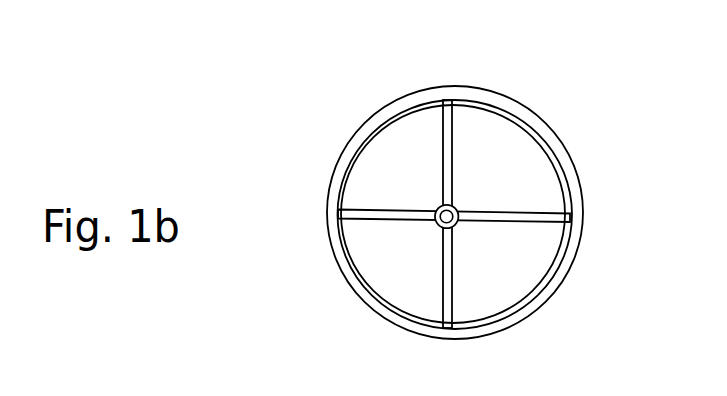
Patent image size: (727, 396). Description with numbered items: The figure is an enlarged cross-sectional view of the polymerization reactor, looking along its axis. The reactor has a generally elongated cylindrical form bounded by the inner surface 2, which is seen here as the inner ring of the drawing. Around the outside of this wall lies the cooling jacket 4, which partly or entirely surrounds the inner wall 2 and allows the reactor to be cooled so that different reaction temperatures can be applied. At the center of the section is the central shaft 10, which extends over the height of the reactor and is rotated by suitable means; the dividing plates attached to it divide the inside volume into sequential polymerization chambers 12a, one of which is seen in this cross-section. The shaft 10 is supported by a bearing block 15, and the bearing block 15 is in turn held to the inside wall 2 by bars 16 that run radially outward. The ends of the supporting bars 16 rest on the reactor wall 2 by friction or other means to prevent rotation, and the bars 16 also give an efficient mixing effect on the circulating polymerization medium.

The cooling jacket 4 is at (488, 100).
The inner surface 2 is at (533, 132).
The chambers 12a is at (513, 187).
The bars 16 is at (515, 218).
The bearing block 15 is at (459, 205).
The central shaft 10 is at (437, 222).